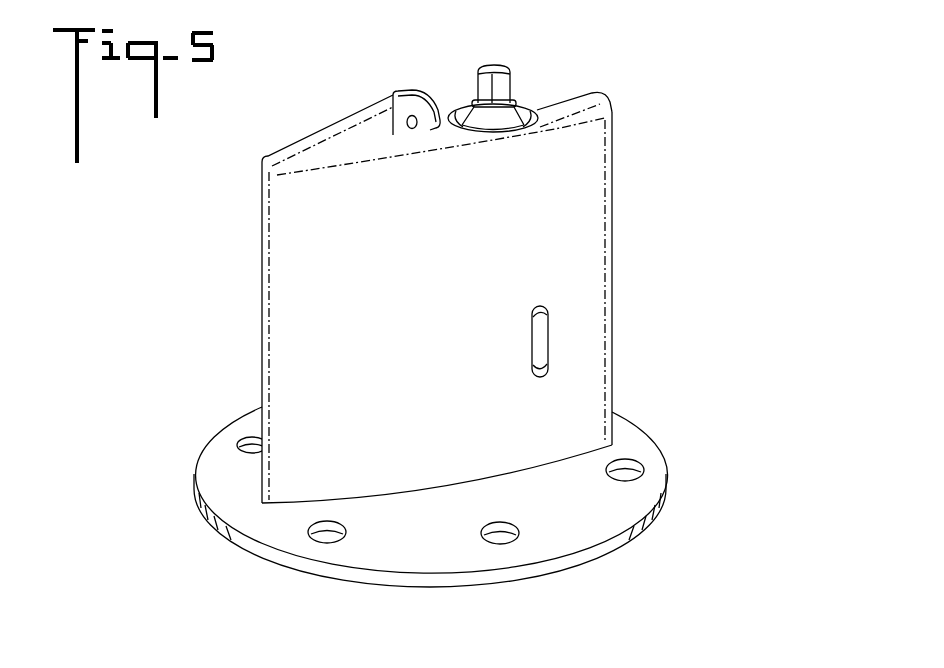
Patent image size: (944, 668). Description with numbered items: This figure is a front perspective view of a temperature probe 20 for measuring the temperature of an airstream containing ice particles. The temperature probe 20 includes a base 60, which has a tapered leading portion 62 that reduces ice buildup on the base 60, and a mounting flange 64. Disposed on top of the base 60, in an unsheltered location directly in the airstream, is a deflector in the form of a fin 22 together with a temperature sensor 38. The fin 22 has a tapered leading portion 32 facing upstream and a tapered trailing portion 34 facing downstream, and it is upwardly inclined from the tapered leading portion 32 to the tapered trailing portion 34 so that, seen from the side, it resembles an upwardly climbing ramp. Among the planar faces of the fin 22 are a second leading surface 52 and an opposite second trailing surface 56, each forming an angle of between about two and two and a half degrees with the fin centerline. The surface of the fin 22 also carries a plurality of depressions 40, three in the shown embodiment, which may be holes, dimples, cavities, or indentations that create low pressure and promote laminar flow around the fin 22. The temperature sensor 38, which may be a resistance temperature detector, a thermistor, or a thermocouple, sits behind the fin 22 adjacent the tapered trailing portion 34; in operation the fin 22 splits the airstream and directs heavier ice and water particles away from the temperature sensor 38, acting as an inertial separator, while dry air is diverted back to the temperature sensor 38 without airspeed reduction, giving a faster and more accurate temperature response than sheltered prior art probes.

The temperature probe 20 is at (696, 64).
The fin 22 is at (322, 104).
The tapered leading portion 32 is at (305, 138).
The tapered trailing portion 34 is at (403, 97).
The temperature sensor 38 is at (498, 87).
The depressions 40 is at (408, 116).
The second leading surface 52 is at (367, 132).
The second trailing surface 56 is at (426, 120).
The base 60 is at (254, 346).
The tapered leading portion 62 is at (300, 313).
The mounting flange 64 is at (206, 468).